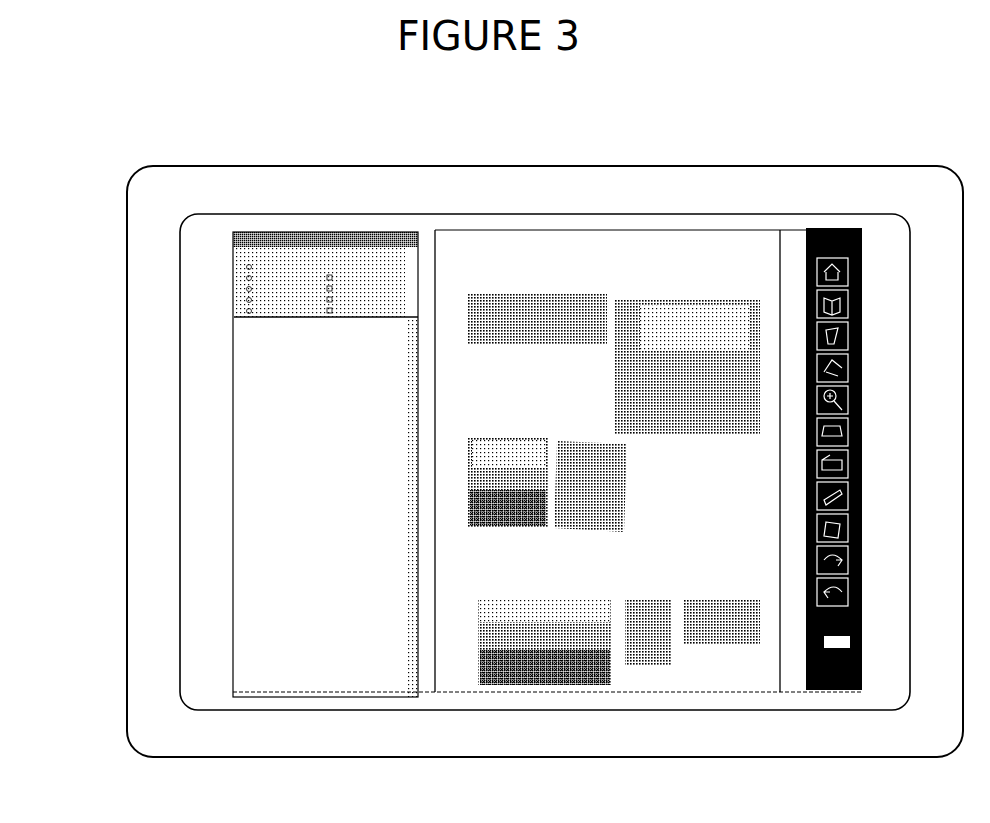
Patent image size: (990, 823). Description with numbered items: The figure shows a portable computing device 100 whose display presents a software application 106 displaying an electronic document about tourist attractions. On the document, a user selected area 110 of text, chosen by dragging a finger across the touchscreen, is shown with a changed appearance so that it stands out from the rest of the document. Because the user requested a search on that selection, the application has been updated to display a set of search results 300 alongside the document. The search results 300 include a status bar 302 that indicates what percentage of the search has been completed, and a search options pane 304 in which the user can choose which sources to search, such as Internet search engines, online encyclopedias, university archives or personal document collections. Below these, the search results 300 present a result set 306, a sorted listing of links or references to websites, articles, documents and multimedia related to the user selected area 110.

The portable computing device 100 is at (104, 93).
The software application 106 is at (864, 292).
The user selected area 110 is at (490, 293).
The search results 300 is at (281, 230).
The status bar 302 is at (227, 240).
The search options pane 304 is at (226, 286).
The result set 306 is at (227, 418).